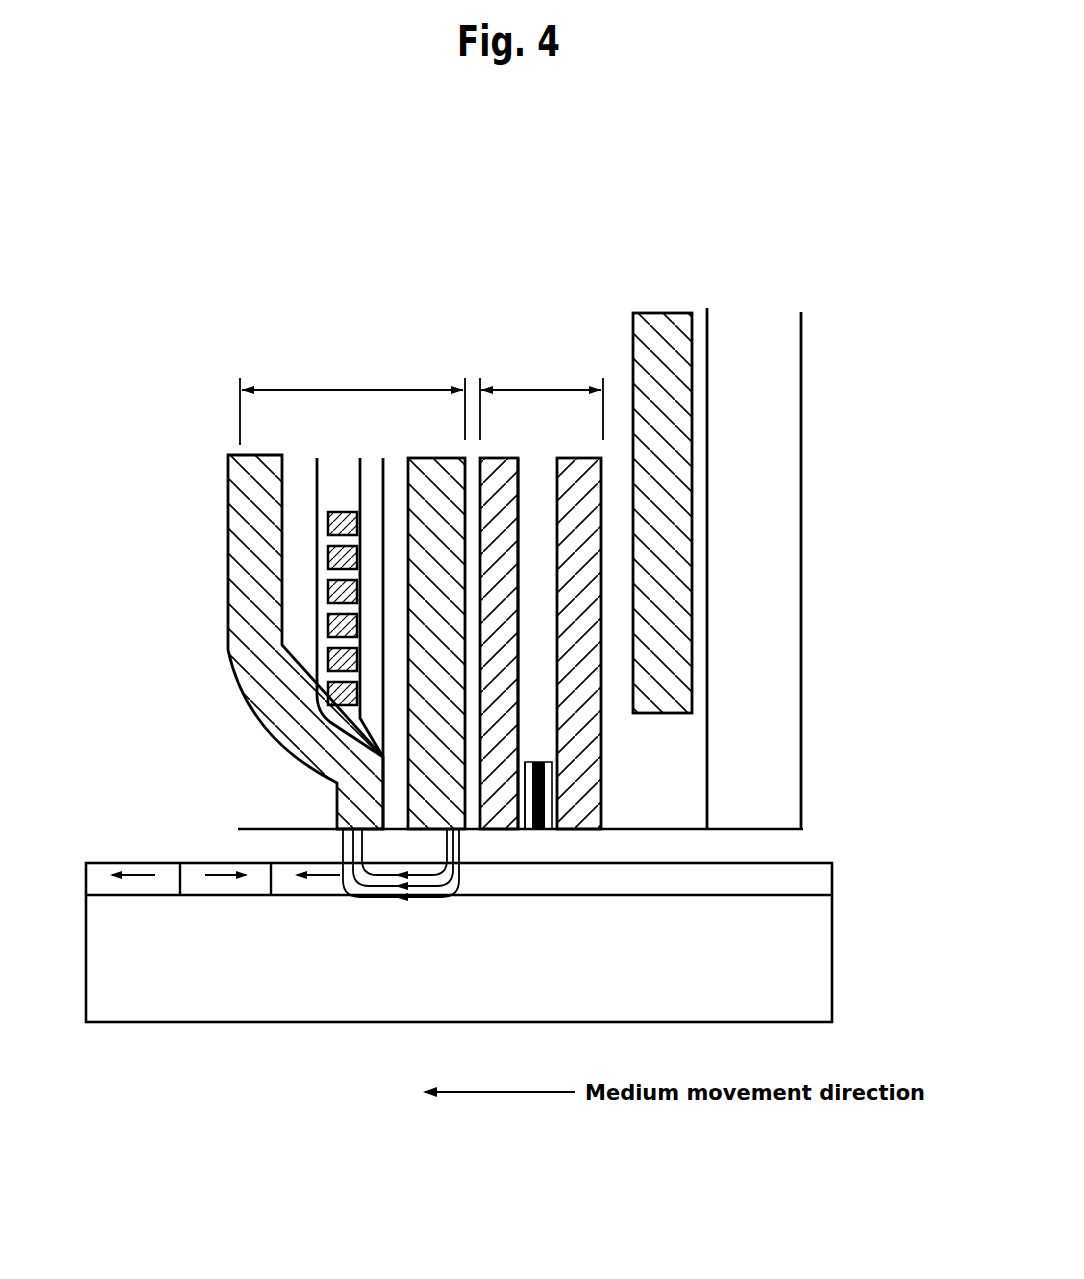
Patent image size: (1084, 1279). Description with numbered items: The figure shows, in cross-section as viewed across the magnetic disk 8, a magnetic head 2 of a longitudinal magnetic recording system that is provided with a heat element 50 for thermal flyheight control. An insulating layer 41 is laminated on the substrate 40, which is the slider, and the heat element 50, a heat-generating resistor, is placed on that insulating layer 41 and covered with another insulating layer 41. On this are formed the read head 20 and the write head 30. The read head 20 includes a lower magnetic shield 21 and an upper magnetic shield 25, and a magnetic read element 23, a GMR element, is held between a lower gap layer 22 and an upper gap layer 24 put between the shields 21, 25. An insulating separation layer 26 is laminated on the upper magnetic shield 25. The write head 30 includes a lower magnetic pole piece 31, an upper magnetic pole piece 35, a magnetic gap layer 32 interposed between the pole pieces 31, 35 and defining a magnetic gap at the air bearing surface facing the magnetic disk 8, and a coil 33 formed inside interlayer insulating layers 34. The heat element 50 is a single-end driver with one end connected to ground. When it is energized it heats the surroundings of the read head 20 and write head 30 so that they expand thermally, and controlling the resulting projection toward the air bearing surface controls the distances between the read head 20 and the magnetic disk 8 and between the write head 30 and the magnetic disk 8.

The magnetic head 2 is at (757, 188).
The magnetic disk 8 is at (716, 995).
The read head 20 is at (540, 378).
The lower magnetic shield 21 is at (584, 460).
The lower gap layer 22 is at (560, 796).
The magnetic read element 23 is at (545, 800).
The upper gap layer 24 is at (527, 800).
The upper magnetic shield 25 is at (519, 480).
The insulating separation layer 26 is at (483, 472).
The write head 30 is at (352, 381).
The lower magnetic pole piece 31 is at (438, 470).
The magnetic gap layer 32 is at (394, 470).
The coil 33 is at (343, 512).
The interlayer insulating layers 34 is at (297, 473).
The upper magnetic pole piece 35 is at (245, 471).
The substrate 40 is at (775, 432).
The insulating layer 41 is at (620, 380).
The heat element 50 is at (666, 332).